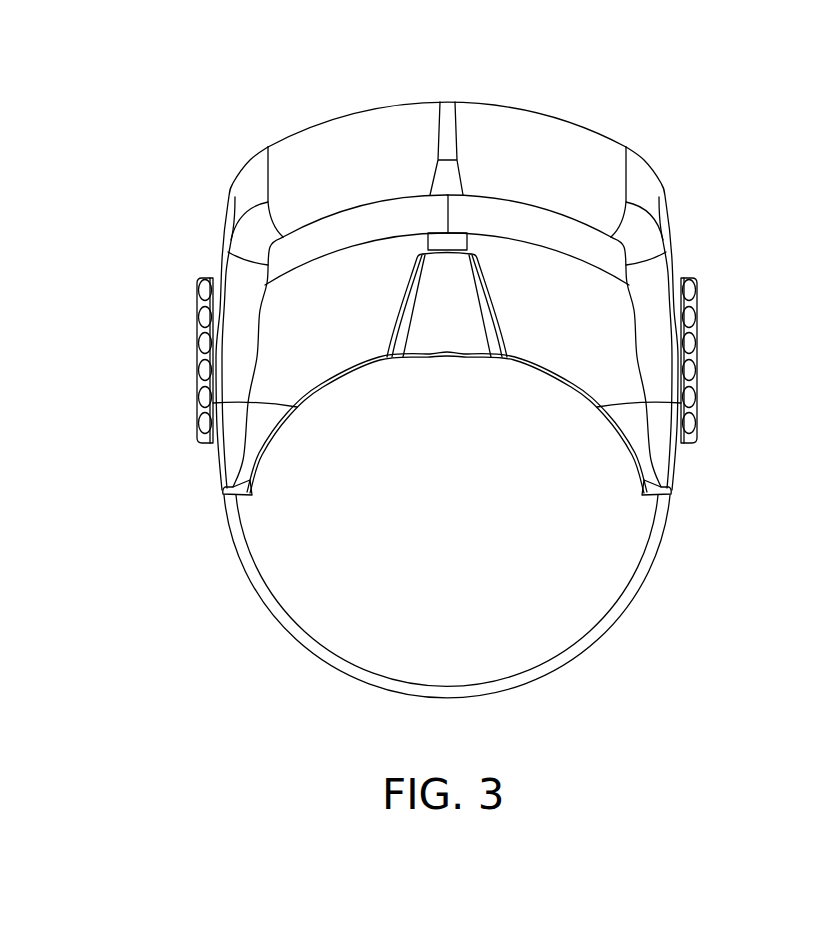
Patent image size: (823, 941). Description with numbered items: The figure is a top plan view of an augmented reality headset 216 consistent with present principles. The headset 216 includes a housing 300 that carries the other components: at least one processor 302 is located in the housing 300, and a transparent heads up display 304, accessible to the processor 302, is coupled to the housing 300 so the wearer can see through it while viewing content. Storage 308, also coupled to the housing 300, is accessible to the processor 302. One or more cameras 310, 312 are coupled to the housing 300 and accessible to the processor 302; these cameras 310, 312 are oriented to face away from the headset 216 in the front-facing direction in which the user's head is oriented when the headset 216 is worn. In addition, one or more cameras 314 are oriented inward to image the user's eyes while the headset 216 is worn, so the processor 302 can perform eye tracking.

The headset 216 is at (133, 56).
The housing 300 is at (655, 552).
The processor 302 is at (332, 252).
The transparent heads up display 304 is at (347, 115).
The storage 308 is at (542, 245).
The camera 310 is at (247, 161).
The camera 312 is at (653, 168).
The camera 314 is at (438, 250).